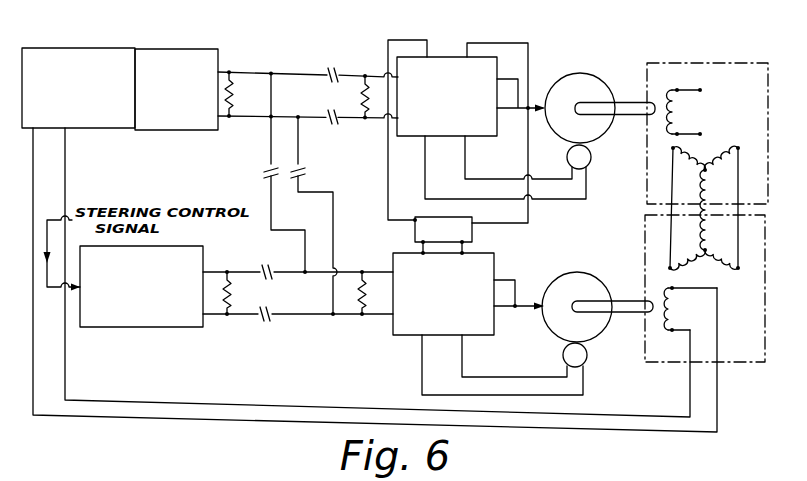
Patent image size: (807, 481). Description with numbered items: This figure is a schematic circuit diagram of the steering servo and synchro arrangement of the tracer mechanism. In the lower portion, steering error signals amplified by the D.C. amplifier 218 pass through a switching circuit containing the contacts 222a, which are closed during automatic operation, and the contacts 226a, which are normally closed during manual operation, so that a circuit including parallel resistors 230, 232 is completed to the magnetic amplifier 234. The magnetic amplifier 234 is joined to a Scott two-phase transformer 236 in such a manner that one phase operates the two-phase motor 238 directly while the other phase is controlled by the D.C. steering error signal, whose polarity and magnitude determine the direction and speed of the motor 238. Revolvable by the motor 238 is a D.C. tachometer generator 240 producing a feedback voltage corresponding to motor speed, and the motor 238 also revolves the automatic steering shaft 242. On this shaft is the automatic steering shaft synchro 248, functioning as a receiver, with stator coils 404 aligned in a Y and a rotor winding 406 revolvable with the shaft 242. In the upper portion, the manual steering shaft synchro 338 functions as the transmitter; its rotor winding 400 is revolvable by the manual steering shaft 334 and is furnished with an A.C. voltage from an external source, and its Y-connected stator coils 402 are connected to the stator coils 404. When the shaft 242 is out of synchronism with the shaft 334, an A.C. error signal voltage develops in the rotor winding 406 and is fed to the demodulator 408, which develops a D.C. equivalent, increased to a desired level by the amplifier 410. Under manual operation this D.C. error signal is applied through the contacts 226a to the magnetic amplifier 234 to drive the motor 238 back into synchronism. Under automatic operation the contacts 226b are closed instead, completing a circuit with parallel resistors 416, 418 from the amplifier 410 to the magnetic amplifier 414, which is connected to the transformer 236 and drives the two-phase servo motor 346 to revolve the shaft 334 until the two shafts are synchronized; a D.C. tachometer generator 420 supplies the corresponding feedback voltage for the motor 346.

The demodulator 408 is at (130, 60).
The amplifier 410 is at (192, 67).
The parallel resistor 416 is at (235, 88).
The contacts 226b is at (328, 110).
The parallel resistor 418 is at (349, 97).
The magnetic amplifier 414 is at (487, 137).
The two-phase servo motor 346 is at (575, 87).
The manual steering shaft 334 is at (620, 103).
The D.C. tachometer generator 420 is at (589, 165).
The manual steering shaft synchro 338 is at (757, 60).
The rotor winding 400 is at (678, 90).
The stator coils 402 is at (708, 166).
The contacts 226a is at (298, 182).
The parallel resistor 230 is at (232, 286).
The contacts 222a is at (274, 277).
The parallel resistor 232 is at (360, 296).
The D.C. amplifier 218 is at (105, 322).
The magnetic amplifier 234 is at (410, 336).
The Scott two-phase transformer 236 is at (468, 235).
The two-phase motor 238 is at (580, 280).
The D.C. tachometer generator 240 is at (563, 356).
The automatic steering shaft 242 is at (637, 313).
The stator coils 404 is at (737, 272).
The rotor winding 406 is at (677, 301).
The automatic steering shaft synchro 248 is at (754, 372).